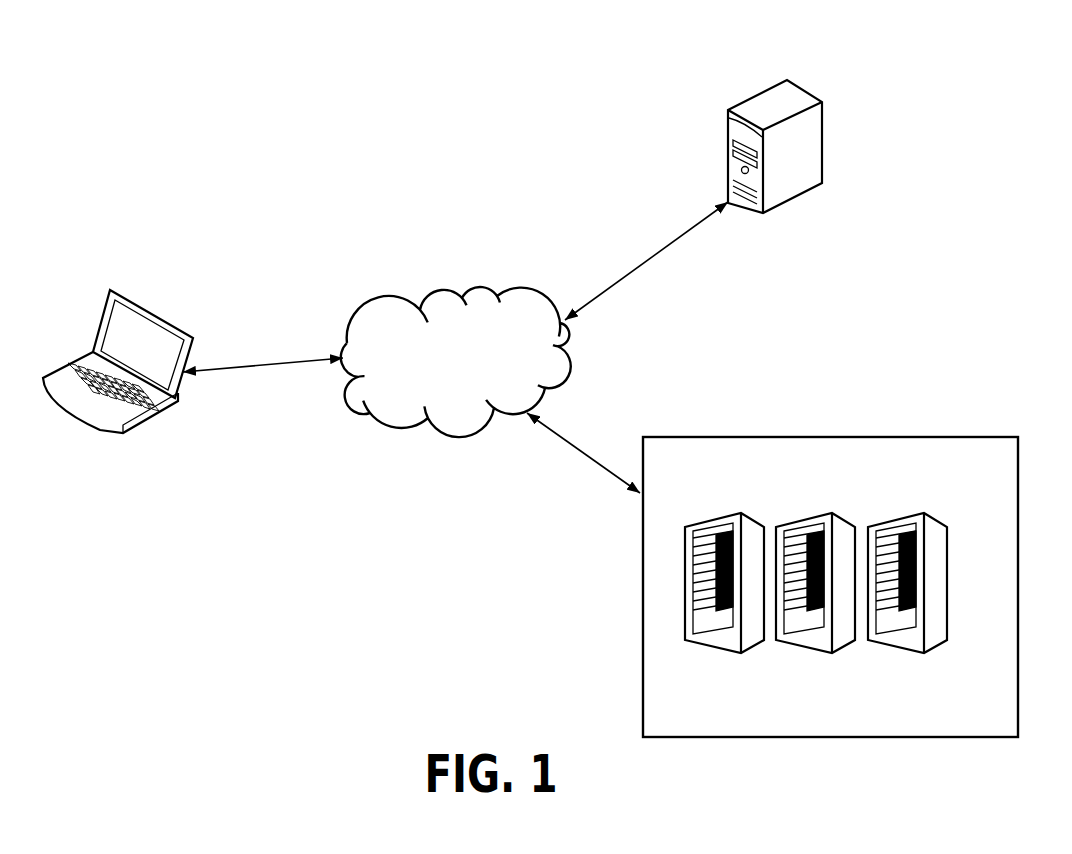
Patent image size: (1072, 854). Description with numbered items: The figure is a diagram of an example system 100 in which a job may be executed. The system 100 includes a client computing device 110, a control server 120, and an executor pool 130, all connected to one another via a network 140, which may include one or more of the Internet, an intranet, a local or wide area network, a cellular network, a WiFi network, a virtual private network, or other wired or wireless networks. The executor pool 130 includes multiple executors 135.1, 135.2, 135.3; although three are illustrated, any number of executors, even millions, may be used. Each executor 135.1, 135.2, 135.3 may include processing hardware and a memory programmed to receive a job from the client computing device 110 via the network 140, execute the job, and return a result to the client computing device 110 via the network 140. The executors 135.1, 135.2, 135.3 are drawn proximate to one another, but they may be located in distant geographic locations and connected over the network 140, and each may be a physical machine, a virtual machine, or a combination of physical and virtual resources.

The system 100 is at (512, 108).
The client computing device 110 is at (118, 407).
The control server 120 is at (775, 190).
The executor pool 130 is at (830, 587).
The executor 135.1 is at (741, 513).
The executor 135.2 is at (845, 564).
The executor 135.3 is at (937, 564).
The network 140 is at (456, 362).